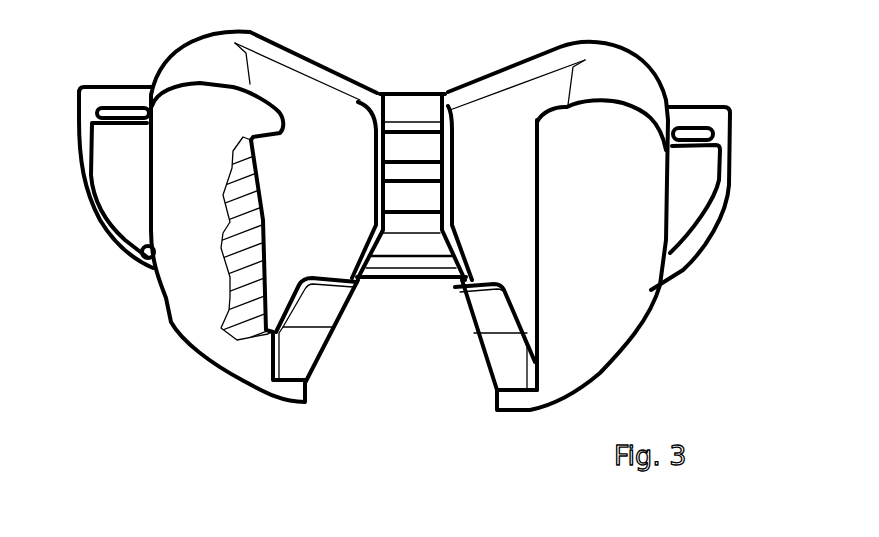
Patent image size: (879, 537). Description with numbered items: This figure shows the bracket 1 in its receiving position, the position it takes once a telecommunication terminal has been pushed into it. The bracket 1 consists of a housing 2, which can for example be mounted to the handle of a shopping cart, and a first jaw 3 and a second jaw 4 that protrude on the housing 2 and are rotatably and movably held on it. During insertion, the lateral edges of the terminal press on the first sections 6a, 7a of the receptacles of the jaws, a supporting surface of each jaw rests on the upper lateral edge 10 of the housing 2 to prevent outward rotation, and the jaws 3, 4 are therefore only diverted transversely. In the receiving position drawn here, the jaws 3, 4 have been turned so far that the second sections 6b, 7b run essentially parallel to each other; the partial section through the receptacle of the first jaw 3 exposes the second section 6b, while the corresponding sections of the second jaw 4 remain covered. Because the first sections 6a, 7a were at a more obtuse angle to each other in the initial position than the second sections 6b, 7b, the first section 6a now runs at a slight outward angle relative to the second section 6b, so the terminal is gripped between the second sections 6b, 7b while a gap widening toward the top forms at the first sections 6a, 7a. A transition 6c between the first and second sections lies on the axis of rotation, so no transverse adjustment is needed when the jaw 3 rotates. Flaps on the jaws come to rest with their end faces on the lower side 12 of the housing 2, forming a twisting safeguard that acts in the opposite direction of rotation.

The bracket 1 is at (386, 213).
The housing 2 is at (107, 177).
The first jaw 3 is at (185, 204).
The second jaw 4 is at (630, 204).
The first section of the first receptacle 6a is at (281, 153).
The second section of the first receptacle 6b is at (288, 264).
The transition 6c is at (287, 208).
The first section of the second receptacle 7a is at (515, 136).
The second section of the second receptacle 7b is at (511, 253).
The upper lateral edge of the housing 10 is at (415, 104).
The lower side of the housing 12 is at (380, 307).